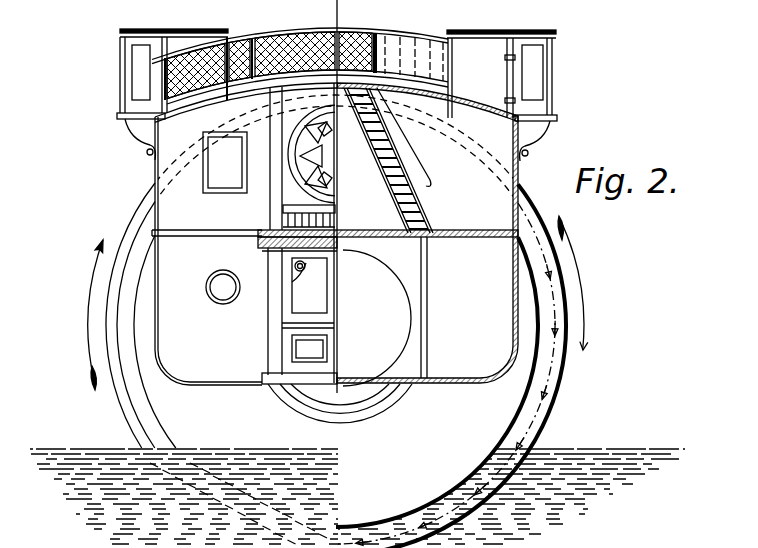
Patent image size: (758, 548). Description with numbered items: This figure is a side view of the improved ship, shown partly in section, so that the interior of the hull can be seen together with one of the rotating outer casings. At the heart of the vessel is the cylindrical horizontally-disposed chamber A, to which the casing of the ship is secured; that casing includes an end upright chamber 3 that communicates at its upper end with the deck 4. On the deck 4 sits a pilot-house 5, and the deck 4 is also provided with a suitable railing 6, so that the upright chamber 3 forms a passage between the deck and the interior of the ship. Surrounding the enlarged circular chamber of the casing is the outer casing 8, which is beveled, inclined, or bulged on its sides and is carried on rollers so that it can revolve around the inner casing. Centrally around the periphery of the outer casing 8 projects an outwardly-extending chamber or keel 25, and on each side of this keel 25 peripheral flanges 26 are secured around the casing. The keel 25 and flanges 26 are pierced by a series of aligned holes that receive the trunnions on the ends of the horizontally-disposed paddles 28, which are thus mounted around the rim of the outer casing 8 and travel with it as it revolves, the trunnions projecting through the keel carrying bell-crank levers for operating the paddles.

The end upright chamber 3 is at (377, 318).
The deck 4 is at (336, 102).
The pilot-house 5 is at (122, 66).
The railing 6 is at (510, 58).
The outer casing 8 is at (531, 416).
The keel 25 is at (571, 334).
The peripheral flange 26 is at (544, 258).
The paddle 28 is at (549, 398).
The cylindrical chamber A is at (323, 329).